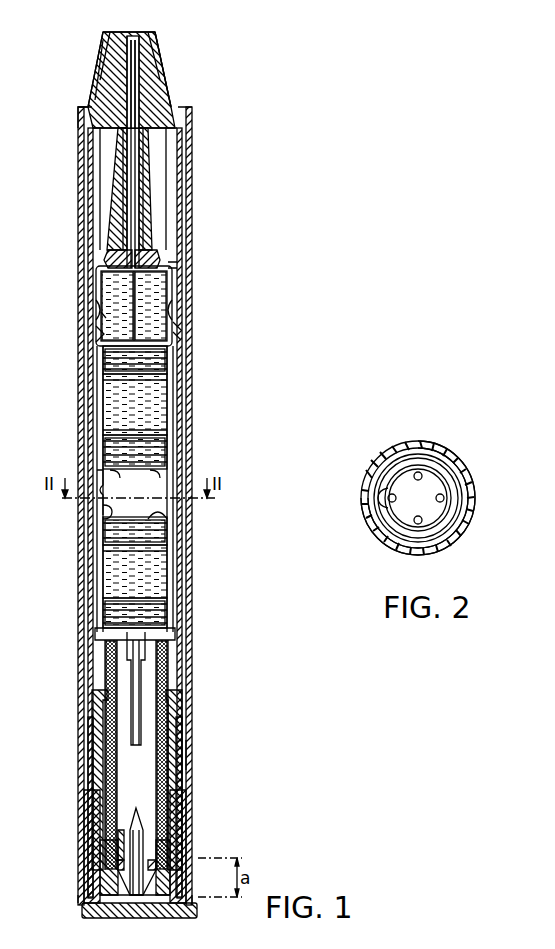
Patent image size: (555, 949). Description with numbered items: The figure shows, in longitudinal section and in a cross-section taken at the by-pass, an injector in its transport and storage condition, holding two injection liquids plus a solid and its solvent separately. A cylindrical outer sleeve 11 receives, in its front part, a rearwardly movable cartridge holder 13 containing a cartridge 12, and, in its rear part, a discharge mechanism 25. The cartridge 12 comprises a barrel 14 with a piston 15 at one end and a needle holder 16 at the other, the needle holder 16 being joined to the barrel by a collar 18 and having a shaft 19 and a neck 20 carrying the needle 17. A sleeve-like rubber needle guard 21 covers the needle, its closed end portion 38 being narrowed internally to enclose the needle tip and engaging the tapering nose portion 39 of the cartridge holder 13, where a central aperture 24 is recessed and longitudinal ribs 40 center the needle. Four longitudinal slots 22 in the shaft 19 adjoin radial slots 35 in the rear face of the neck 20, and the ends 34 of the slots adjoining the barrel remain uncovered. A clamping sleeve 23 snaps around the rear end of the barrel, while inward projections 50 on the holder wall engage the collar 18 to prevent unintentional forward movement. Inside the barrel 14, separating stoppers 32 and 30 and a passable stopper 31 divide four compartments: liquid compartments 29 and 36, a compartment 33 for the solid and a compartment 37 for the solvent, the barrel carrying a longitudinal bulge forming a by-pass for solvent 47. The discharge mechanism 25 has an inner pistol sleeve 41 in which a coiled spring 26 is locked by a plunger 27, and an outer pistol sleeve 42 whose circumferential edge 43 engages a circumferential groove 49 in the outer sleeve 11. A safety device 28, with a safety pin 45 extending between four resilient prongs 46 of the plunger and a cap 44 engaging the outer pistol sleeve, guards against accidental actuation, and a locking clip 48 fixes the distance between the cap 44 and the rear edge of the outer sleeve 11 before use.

In FIG. 1, the outer sleeve 11 is at (186, 387).
In FIG. 2, the outer sleeve 11 is at (440, 458).
In FIG. 1, the cartridge 12 is at (166, 448).
In FIG. 1, the cartridge holder 13 is at (179, 178).
In FIG. 2, the cartridge holder 13 is at (415, 457).
In FIG. 1, the barrel 14 is at (150, 413).
In FIG. 2, the barrel 14 is at (392, 472).
In FIG. 1, the piston 15 is at (108, 616).
In FIG. 1, the needle holder 16 is at (180, 268).
In FIG. 1, the needle 17 is at (133, 150).
In FIG. 1, the collar 18 is at (170, 360).
In FIG. 1, the shaft 19 is at (171, 308).
In FIG. 1, the neck 20 is at (146, 243).
In FIG. 1, the needle guard 21 is at (116, 212).
In FIG. 1, the longitudinal slots 22 is at (118, 302).
In FIG. 1, the clamping sleeve 23 is at (100, 598).
In FIG. 1, the central aperture 24 is at (140, 30).
In FIG. 1, the discharge mechanism 25 is at (194, 754).
In FIG. 1, the coiled spring 26 is at (141, 676).
In FIG. 1, the plunger 27 is at (160, 672).
In FIG. 1, the safety device 28 is at (80, 903).
In FIG. 1, the liquid compartment 29 is at (150, 288).
In FIG. 1, the rear separating stopper 30 is at (108, 438).
In FIG. 1, the passable stopper 31 is at (108, 532).
In FIG. 2, the passable stopper 31 is at (408, 505).
In FIG. 1, the front separating stopper 32 is at (108, 362).
In FIG. 1, the solid compartment 33 is at (112, 468).
In FIG. 1, the slot ends 34 is at (100, 331).
In FIG. 1, the radial slots 35 is at (112, 283).
In FIG. 1, the liquid compartment 36 is at (110, 397).
In FIG. 1, the solvent compartment 37 is at (112, 570).
In FIG. 1, the closed end portion 38 is at (140, 88).
In FIG. 1, the tapering nose portion 39 is at (158, 62).
In FIG. 1, the longitudinal ribs 40 is at (95, 97).
In FIG. 1, the inner pistol sleeve 41 is at (172, 703).
In FIG. 1, the outer pistol sleeve 42 is at (180, 728).
In FIG. 1, the circumferential edge 43 is at (186, 838).
In FIG. 1, the cap 44 is at (197, 906).
In FIG. 1, the safety pin 45 is at (118, 835).
In FIG. 1, the resilient prongs 46 is at (128, 848).
In FIG. 1, the by-pass for solvent 47 is at (110, 511).
In FIG. 2, the by-pass for solvent 47 is at (380, 492).
In FIG. 1, the locking clip 48 is at (100, 877).
In FIG. 1, the circumferential groove 49 is at (190, 800).
In FIG. 1, the inward projections 50 is at (178, 330).